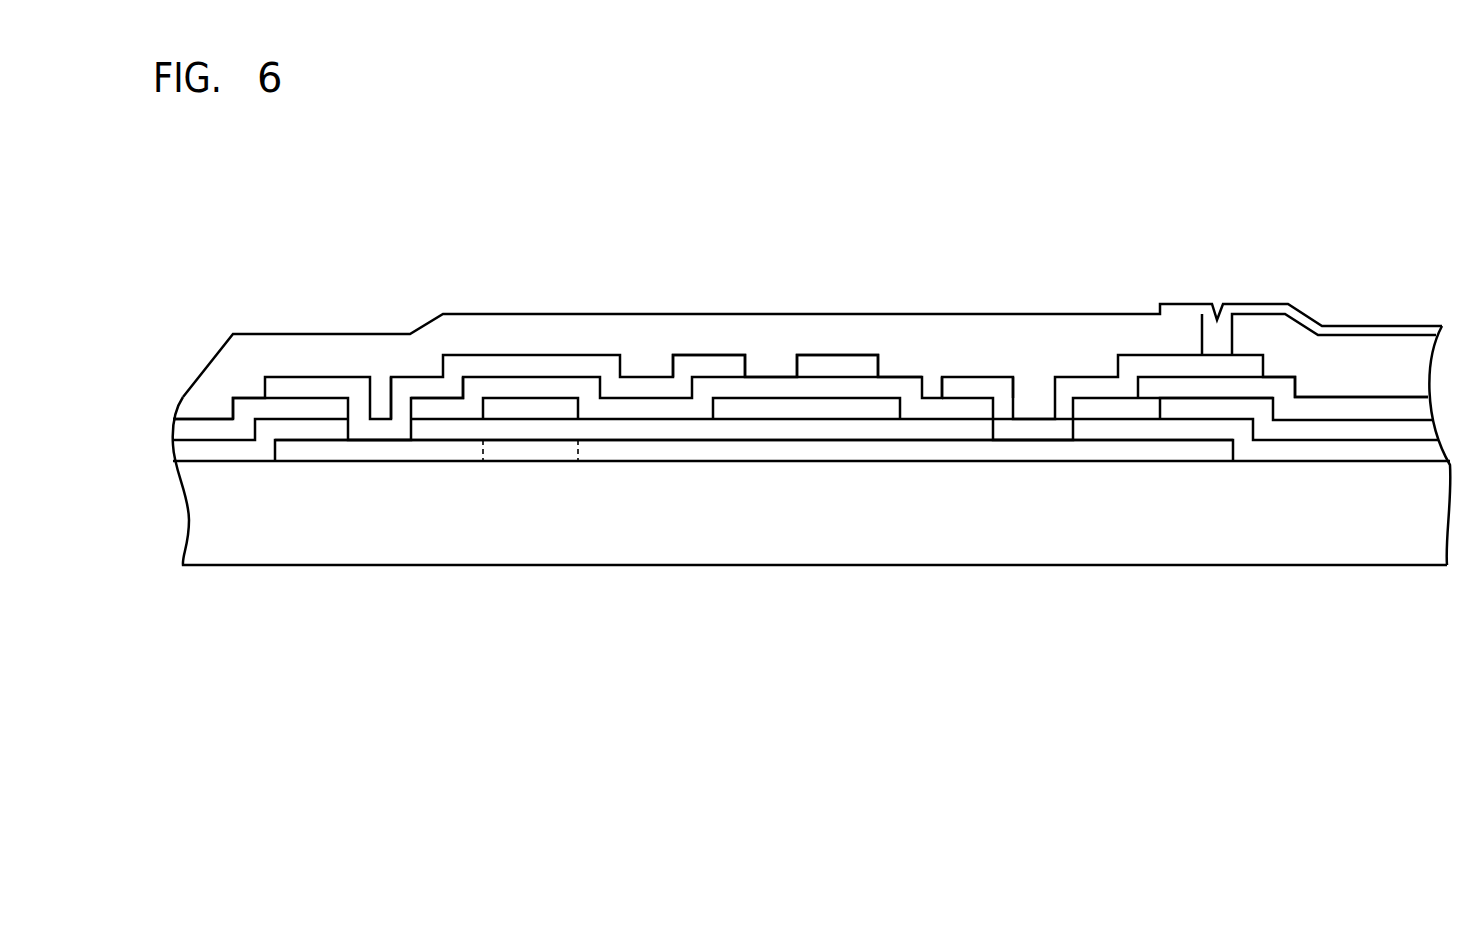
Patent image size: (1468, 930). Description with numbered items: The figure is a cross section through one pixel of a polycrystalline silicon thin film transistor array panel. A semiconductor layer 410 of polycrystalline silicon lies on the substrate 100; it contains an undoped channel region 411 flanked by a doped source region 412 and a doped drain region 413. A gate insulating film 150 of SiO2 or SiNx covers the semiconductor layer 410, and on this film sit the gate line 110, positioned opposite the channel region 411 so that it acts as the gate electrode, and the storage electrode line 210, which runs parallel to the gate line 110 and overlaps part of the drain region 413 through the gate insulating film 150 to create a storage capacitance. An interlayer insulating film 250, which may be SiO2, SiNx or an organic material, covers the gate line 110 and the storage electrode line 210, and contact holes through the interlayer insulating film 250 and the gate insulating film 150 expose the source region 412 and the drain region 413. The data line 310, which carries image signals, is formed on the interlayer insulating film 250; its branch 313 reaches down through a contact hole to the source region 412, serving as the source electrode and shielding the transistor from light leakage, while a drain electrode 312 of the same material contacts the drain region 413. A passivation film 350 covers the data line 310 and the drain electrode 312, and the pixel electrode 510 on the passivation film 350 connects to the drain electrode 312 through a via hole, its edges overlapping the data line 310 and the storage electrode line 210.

The substrate 100 is at (1322, 555).
The gate line 110 is at (514, 405).
The gate insulating film 150 is at (232, 452).
The storage electrode line 210 is at (765, 405).
The interlayer insulating film 250 is at (300, 405).
The data line 310 is at (858, 365).
The drain electrode 312 is at (980, 385).
The branch 313 is at (408, 380).
The passivation film 350 is at (625, 323).
The semiconductor layer 410 is at (673, 648).
The channel region 411 is at (517, 450).
The source region 412 is at (357, 450).
The drain region 413 is at (637, 445).
The pixel electrode 510 is at (1183, 305).